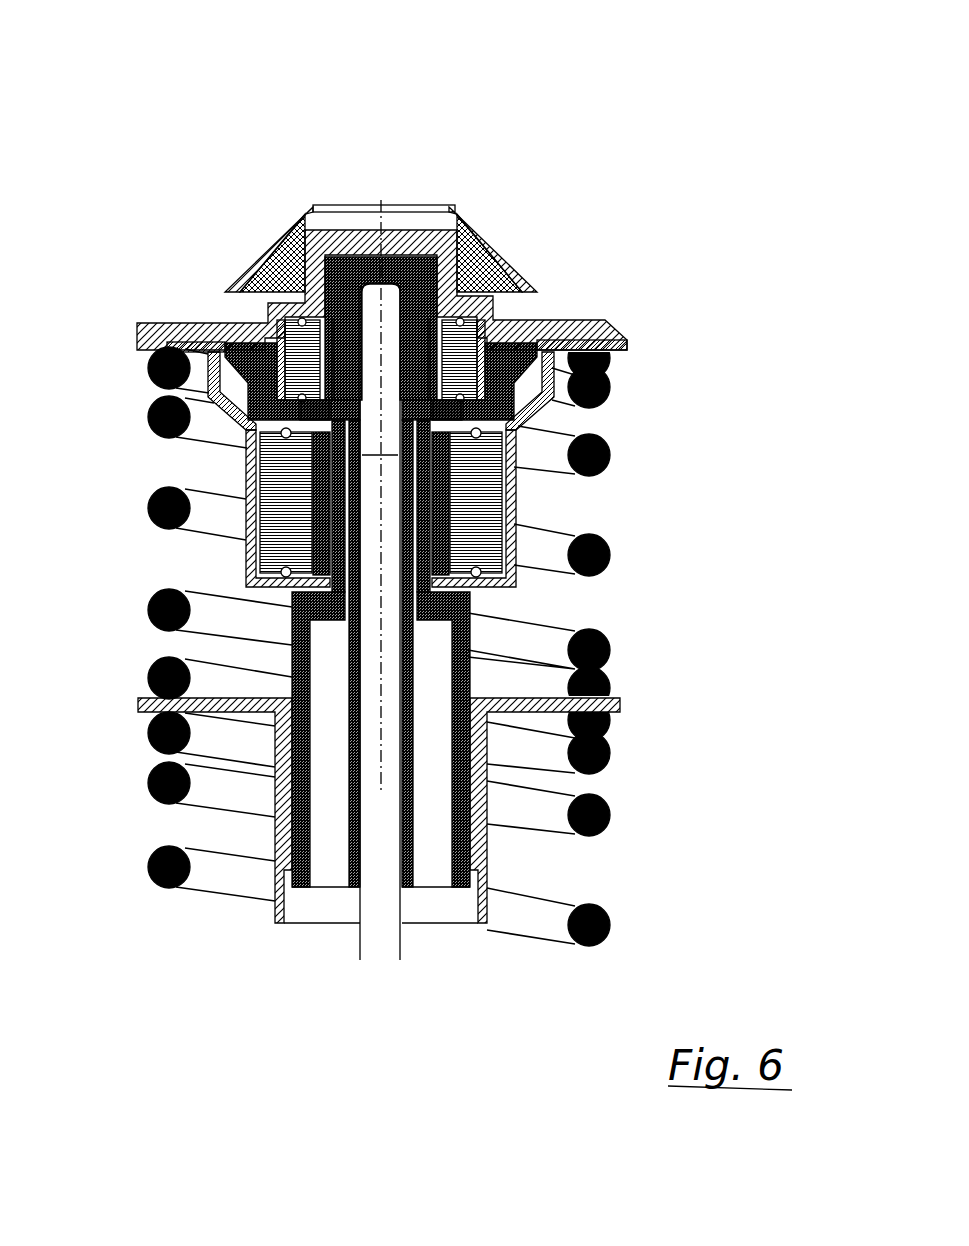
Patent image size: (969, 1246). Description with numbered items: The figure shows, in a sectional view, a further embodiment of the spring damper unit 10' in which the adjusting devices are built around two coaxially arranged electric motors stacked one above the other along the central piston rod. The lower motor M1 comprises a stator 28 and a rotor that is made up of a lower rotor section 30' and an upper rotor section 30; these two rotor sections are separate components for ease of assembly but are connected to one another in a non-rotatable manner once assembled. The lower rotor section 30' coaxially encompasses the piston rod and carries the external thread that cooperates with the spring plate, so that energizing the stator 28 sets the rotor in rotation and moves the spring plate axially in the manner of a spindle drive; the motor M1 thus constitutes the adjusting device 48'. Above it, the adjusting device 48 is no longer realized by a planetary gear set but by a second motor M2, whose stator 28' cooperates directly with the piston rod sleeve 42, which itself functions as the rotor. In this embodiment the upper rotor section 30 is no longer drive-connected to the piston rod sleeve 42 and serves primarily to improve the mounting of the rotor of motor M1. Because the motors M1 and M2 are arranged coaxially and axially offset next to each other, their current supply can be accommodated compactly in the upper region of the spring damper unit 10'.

The spring damper unit 10' is at (365, 180).
The piston rod sleeve 42 is at (342, 288).
The upper rotor section 30 is at (351, 321).
The lower rotor section 30' is at (266, 739).
The adjusting device 48 is at (357, 291).
The adjusting device 48' is at (278, 508).
The stator 28 is at (435, 398).
The stator 28' is at (438, 290).
The motor M1 is at (560, 506).
The motor M2 is at (566, 307).